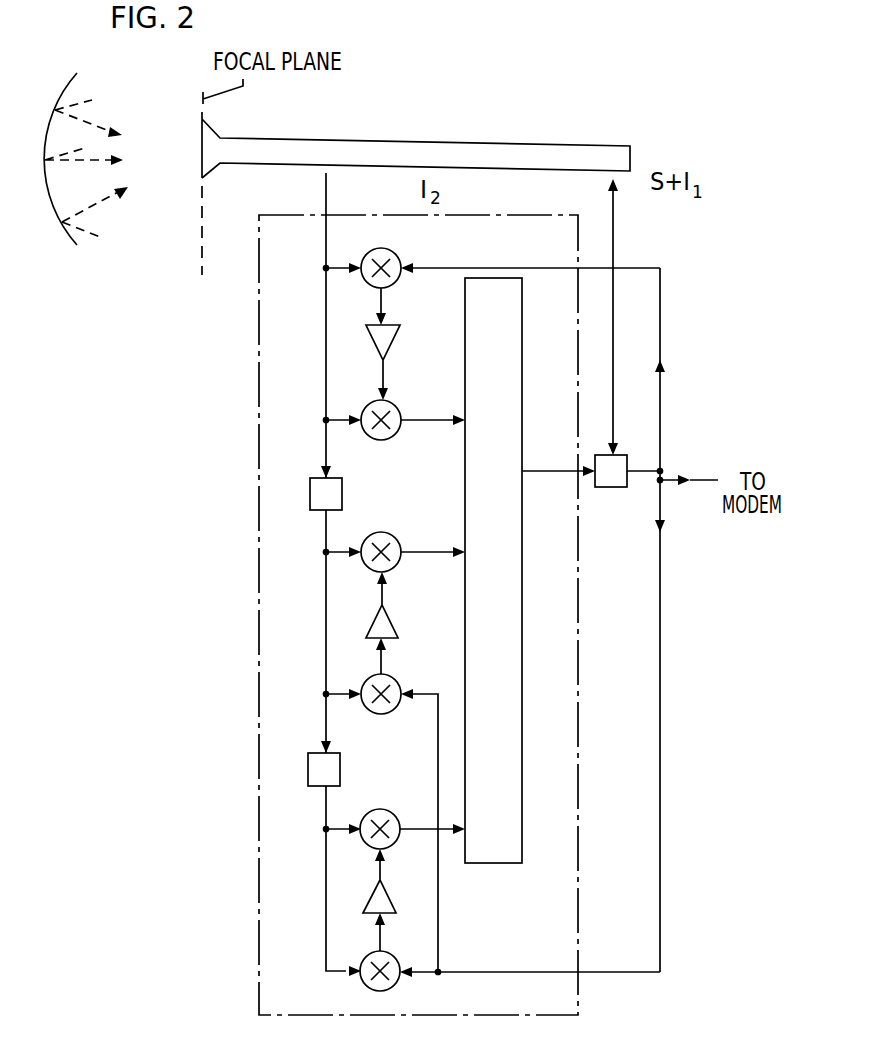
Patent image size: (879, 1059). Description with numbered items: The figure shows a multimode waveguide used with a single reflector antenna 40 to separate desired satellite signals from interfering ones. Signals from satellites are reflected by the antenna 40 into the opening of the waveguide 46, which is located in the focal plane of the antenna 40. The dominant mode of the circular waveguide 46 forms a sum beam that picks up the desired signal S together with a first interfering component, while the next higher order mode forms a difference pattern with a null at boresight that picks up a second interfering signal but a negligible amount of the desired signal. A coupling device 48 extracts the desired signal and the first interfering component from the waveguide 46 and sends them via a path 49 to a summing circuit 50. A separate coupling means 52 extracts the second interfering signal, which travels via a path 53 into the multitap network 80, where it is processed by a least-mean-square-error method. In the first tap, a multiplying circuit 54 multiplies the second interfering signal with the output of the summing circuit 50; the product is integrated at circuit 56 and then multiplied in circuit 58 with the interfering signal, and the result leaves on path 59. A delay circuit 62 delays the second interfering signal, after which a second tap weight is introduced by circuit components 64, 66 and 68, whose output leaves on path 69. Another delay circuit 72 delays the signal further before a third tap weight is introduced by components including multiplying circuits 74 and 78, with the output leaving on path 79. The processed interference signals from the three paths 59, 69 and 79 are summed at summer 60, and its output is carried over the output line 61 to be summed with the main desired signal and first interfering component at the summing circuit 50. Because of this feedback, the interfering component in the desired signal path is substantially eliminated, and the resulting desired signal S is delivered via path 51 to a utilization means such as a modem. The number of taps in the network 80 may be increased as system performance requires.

The reflector antenna 40 is at (70, 73).
The waveguide 46 is at (385, 139).
The coupling device 48 is at (617, 186).
The path 49 is at (613, 255).
The summing circuit 50 is at (612, 490).
The path 51 is at (668, 478).
The coupling means 52 is at (326, 174).
The path 53 is at (326, 198).
The multiplying circuit 54 is at (398, 253).
The integrating circuit 56 is at (398, 325).
The multiplying circuit 58 is at (394, 401).
The path 59 is at (443, 423).
The summer 60 is at (523, 322).
The sum output line 61 is at (563, 469).
The delay circuit 62 is at (310, 478).
The multiplying circuit 64 is at (389, 675).
The integrating circuit 66 is at (375, 615).
The multiplying circuit 68 is at (372, 533).
The path 69 is at (433, 556).
The delay circuit 72 is at (308, 757).
The multiplying circuit 74 is at (375, 952).
The multiplying circuit 78 is at (376, 808).
The path 79 is at (445, 831).
The network 80 is at (259, 660).